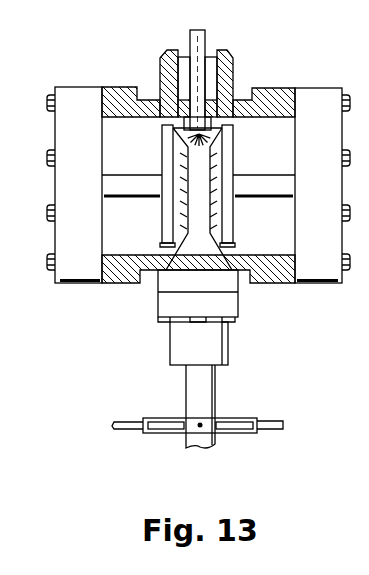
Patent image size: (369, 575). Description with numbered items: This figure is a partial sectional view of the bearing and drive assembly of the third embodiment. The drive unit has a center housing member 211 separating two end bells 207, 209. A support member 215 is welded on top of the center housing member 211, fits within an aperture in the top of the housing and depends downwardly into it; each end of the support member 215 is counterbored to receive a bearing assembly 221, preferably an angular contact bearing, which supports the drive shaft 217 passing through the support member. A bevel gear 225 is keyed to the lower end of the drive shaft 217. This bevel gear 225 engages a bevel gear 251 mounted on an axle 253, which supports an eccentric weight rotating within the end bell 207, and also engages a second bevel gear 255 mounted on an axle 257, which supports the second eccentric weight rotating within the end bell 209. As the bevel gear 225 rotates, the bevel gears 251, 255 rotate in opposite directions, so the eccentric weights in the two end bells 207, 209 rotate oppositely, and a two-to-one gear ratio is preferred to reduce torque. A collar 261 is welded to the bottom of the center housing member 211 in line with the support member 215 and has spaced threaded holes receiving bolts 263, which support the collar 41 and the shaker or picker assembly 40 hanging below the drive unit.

The drive shaft 217 is at (205, 46).
The support member 215 is at (162, 58).
The bearing assembly 221 is at (176, 102).
The center housing member 211 is at (283, 88).
The bevel gear 225 is at (203, 146).
The axle 253 is at (142, 190).
The axle 257 is at (263, 188).
The end bell 207 is at (78, 284).
The end bell 209 is at (328, 282).
The bevel gear 251 is at (160, 283).
The second bevel gear 255 is at (238, 274).
The collar 261 is at (178, 281).
The bolts 263 is at (168, 323).
The collar 41 is at (184, 368).
The shaker 40 is at (254, 404).